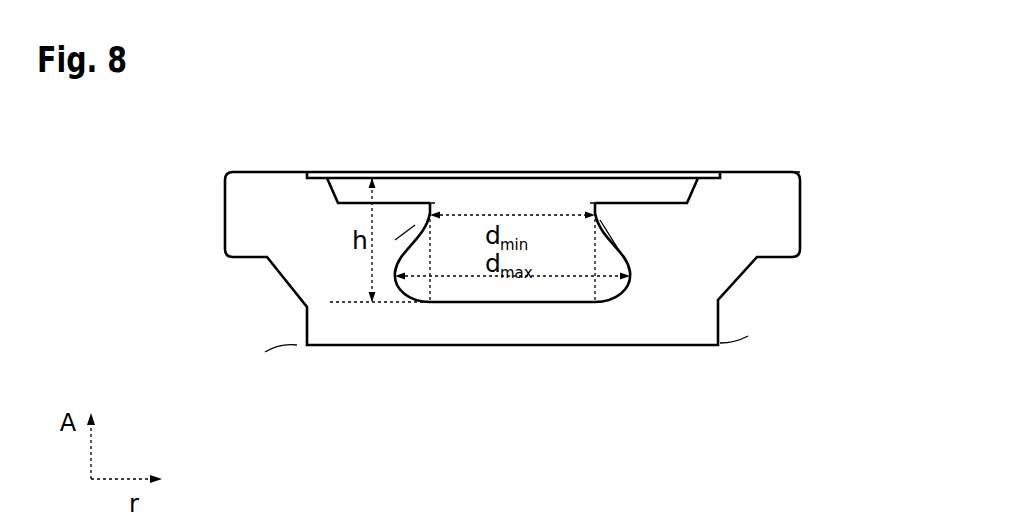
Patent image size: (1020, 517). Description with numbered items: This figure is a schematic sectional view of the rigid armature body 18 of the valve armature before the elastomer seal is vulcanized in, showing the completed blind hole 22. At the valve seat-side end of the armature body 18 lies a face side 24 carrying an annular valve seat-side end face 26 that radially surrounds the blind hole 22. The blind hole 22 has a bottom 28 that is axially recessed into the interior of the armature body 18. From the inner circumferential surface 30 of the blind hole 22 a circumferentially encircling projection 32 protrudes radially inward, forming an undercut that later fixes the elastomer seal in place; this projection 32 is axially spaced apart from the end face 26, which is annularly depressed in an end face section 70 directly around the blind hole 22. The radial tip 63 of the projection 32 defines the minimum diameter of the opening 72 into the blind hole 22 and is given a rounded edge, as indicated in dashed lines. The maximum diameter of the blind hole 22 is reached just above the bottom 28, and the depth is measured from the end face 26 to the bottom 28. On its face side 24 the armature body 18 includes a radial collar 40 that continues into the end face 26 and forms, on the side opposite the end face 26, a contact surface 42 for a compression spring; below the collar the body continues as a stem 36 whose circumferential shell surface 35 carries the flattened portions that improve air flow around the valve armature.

The armature body 18 is at (161, 169).
The blind hole 22 is at (552, 232).
The face side 24 is at (710, 131).
The valve seat-side end face 26 is at (268, 172).
The bottom 28 is at (507, 296).
The inner circumferential surface 30 is at (610, 258).
The projection 32 is at (407, 218).
The circumferential shell surface 35 is at (733, 283).
The stem 36 is at (667, 332).
The radial collar 40 is at (783, 187).
The contact surface 42 is at (785, 258).
The radial tip 63 is at (433, 203).
The end face section 70 is at (634, 197).
The opening 72 is at (490, 208).